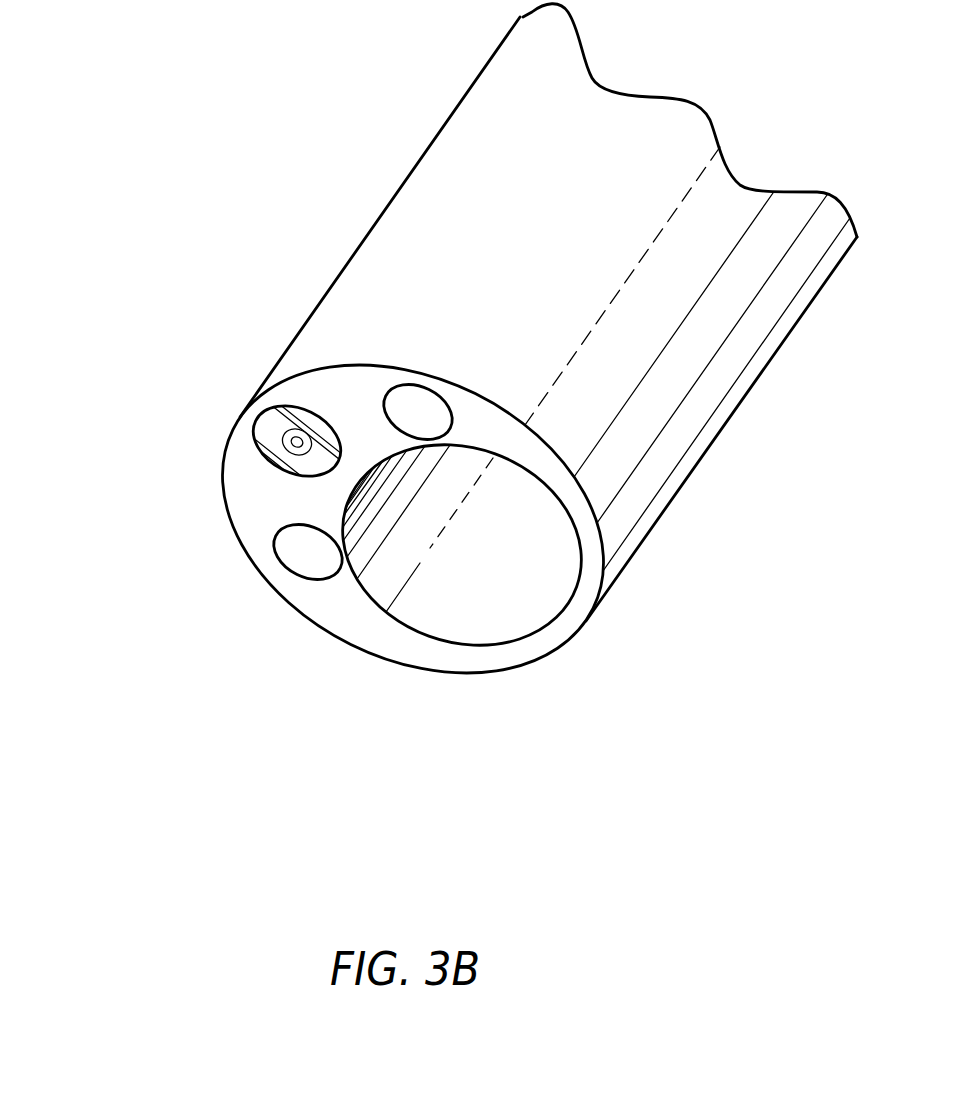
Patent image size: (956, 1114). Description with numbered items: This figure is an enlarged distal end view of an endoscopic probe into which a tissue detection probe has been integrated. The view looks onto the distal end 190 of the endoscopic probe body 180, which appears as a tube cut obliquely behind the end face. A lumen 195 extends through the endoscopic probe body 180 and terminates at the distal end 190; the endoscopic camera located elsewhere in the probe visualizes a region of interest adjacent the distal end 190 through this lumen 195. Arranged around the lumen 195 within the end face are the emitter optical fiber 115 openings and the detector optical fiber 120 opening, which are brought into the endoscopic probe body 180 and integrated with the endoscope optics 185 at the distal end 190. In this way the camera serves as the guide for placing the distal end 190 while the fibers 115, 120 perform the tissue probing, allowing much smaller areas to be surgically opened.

The emitter optical fiber 115 is at (427, 405).
The detector optical fiber 120 is at (272, 427).
The endoscopic probe body 180 is at (622, 550).
The endoscope optics 185 is at (338, 607).
The distal end 190 is at (245, 484).
The lumen 195 is at (528, 640).